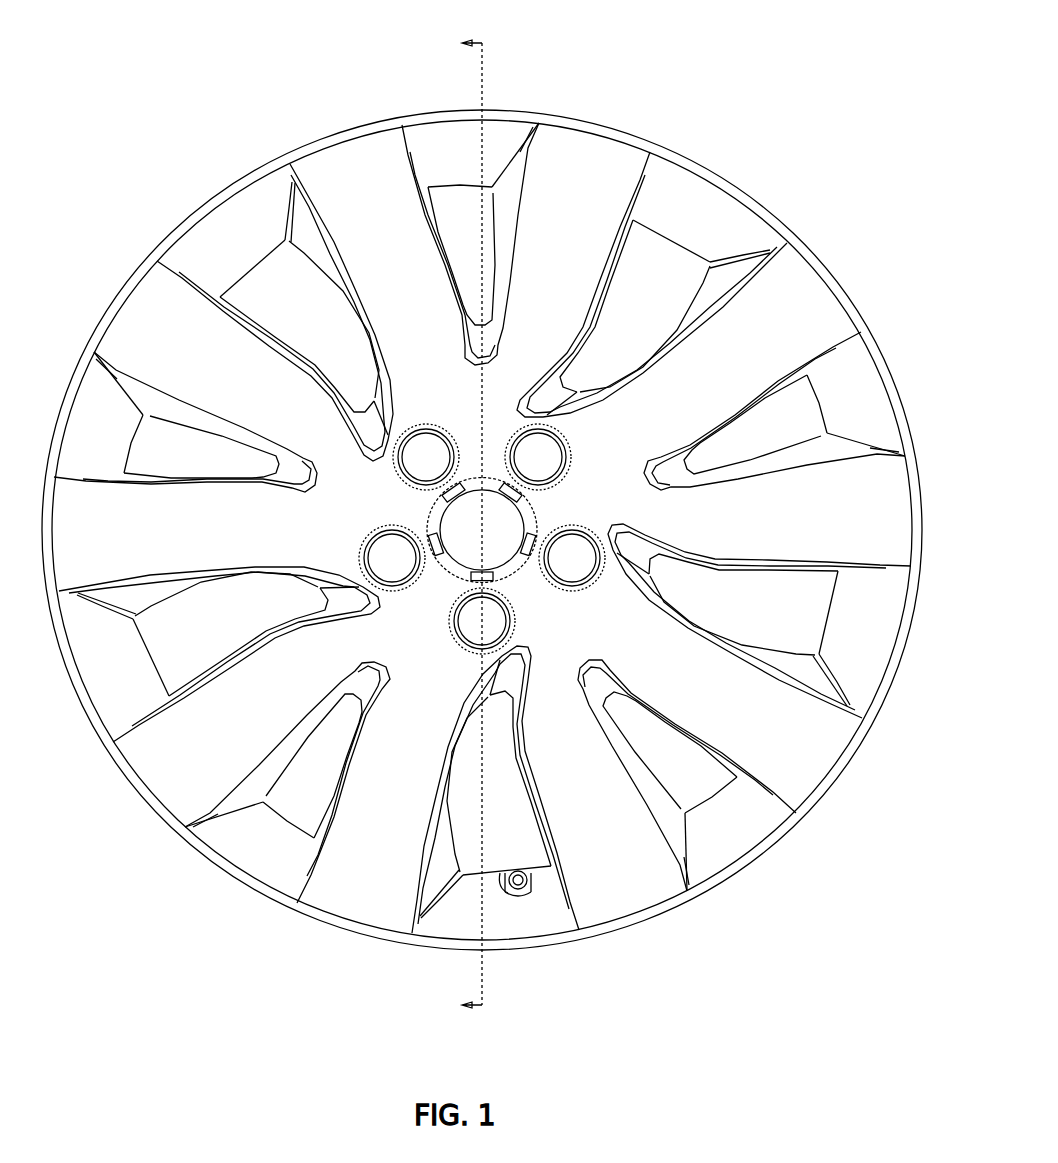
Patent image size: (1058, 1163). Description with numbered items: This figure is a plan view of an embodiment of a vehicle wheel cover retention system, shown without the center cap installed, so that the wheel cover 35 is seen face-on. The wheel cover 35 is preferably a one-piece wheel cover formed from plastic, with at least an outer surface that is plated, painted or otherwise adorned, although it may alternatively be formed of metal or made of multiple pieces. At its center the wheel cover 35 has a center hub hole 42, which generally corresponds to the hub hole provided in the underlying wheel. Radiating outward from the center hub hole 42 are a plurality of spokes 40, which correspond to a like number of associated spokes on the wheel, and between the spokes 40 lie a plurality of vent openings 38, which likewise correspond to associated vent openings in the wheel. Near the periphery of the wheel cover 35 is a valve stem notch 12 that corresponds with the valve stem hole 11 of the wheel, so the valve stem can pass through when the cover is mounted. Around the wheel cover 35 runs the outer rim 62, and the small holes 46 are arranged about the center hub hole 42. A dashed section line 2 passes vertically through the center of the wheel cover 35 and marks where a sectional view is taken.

The wheel cover 35 is at (501, 530).
The vent openings 38 is at (790, 642).
The spokes 40 is at (770, 720).
The center hub hole 42 is at (517, 513).
The lug hole 46 is at (600, 568).
The outer rim 62 is at (747, 857).
The valve stem hole 11 is at (515, 870).
The valve stem notch 12 is at (498, 884).
The section line 2- 2 is at (473, 530).